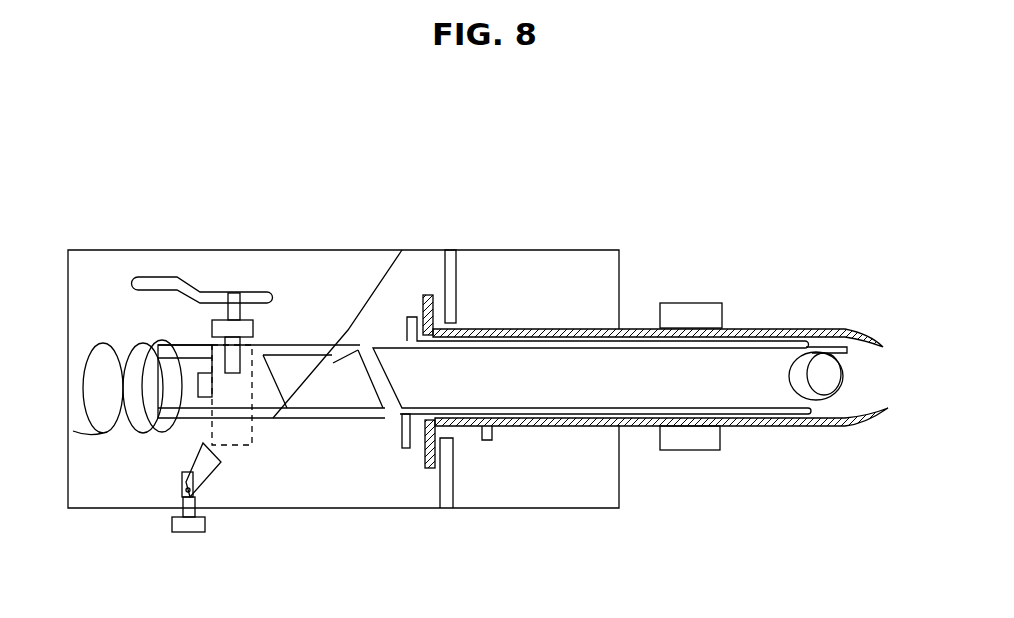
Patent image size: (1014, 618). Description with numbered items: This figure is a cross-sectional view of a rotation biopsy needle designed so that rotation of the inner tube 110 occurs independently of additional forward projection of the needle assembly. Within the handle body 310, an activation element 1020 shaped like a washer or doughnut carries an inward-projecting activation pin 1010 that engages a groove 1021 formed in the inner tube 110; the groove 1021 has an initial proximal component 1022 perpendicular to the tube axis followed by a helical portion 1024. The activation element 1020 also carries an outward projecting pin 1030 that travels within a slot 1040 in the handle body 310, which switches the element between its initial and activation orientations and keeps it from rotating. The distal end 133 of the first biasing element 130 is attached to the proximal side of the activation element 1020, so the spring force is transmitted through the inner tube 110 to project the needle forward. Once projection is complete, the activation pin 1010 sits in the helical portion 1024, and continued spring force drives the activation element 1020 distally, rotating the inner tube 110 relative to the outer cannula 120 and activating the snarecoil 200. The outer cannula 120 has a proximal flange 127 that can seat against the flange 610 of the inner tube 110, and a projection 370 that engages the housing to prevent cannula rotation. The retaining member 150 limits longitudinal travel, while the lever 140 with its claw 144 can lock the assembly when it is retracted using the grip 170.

The handle body 310 is at (357, 250).
The first biasing element 130 is at (110, 345).
The second end of the biasing element 133 is at (183, 345).
The activation pin 1010 is at (205, 385).
The slot 1040 is at (188, 290).
The outward projecting pin 1030 is at (234, 293).
The initial proximal component of the groove 1022 is at (210, 375).
The helical portion of the groove 1024 is at (293, 409).
The activation element 1020 is at (243, 391).
The groove 1021 is at (402, 250).
The claw 144 is at (212, 467).
The lever 140 is at (193, 530).
The inner tube 110 is at (773, 340).
The outer cannula 120 is at (742, 328).
The flange 127 is at (428, 470).
The retaining member 150 is at (447, 483).
The flange 610 is at (405, 448).
The projection 370 is at (488, 442).
The grip 170 is at (687, 451).
The snarecoil 200 is at (827, 348).